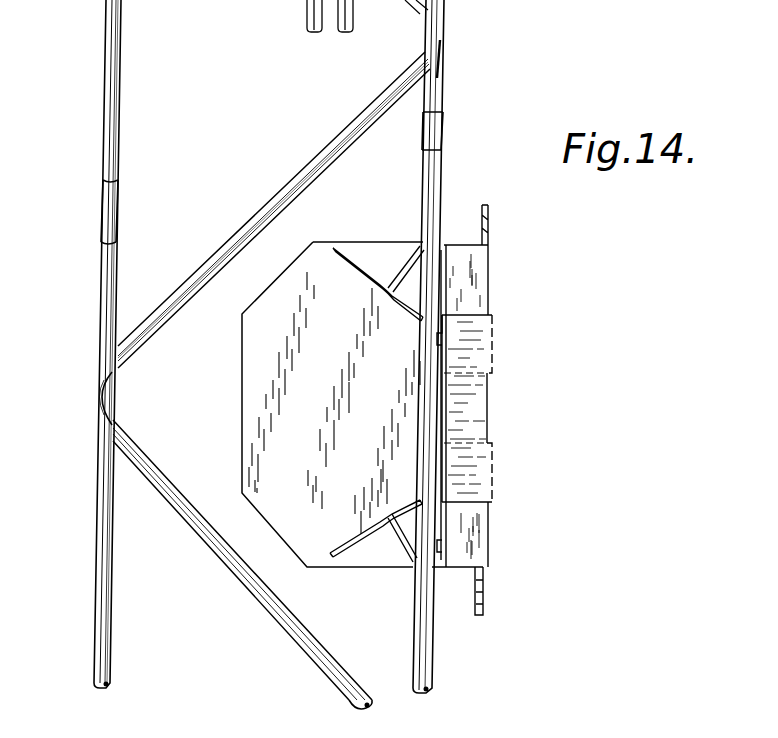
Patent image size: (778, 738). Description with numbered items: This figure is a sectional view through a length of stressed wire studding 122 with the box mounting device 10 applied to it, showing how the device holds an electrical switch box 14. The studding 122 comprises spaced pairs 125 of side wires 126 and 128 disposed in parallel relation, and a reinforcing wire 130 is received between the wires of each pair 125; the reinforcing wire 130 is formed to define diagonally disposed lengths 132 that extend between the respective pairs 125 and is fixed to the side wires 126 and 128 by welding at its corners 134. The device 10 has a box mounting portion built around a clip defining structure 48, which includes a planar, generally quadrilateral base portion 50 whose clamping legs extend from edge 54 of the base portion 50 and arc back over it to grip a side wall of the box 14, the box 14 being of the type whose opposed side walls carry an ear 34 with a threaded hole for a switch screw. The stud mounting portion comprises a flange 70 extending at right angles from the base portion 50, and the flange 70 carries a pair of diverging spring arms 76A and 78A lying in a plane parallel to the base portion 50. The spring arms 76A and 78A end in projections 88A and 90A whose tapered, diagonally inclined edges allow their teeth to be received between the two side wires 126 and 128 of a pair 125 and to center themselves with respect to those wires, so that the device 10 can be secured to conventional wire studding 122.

The box mounting device 10 is at (332, 561).
The box 14 is at (266, 17).
The ear 34 is at (490, 222).
The clip defining structure 48 is at (463, 313).
The base portion 50 is at (470, 325).
The edge 54 is at (488, 408).
The flange 70 is at (440, 402).
The spring arm 76A is at (358, 258).
The spring arm 78A is at (375, 545).
The projection 88A is at (407, 258).
The projection 90A is at (397, 545).
The stressed wire studding 122 is at (448, 42).
The pair of side wires 125 is at (98, 70).
The side wire 126 is at (118, 158).
The side wire 128 is at (120, 213).
The reinforcing wire 130 is at (253, 226).
The diagonally disposed length 132 is at (332, 170).
The corner 134 is at (93, 393).